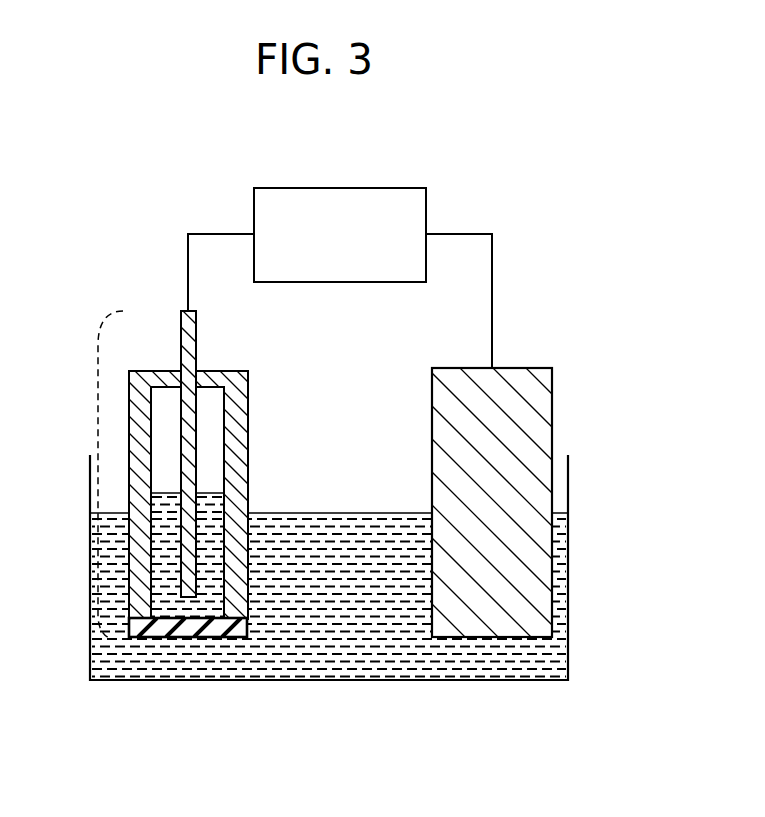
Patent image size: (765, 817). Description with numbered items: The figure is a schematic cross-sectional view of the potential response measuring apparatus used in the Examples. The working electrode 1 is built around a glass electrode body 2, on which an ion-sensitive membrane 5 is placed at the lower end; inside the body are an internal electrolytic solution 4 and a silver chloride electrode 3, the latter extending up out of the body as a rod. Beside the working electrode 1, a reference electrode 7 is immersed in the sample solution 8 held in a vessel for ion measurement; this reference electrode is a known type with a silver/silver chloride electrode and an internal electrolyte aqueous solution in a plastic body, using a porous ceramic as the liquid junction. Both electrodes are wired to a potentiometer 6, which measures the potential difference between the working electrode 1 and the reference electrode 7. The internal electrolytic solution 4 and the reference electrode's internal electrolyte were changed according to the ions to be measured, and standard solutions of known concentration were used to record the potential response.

The working electrode 1 is at (95, 475).
The glass electrode body 2 is at (153, 377).
The silver chloride electrode 3 is at (187, 313).
The internal electrolytic solution 4 is at (215, 607).
The ion-sensitive membrane 5 is at (160, 628).
The potentiometer 6 is at (329, 203).
The reference electrode 7 is at (489, 605).
The sample solution 8 is at (346, 605).